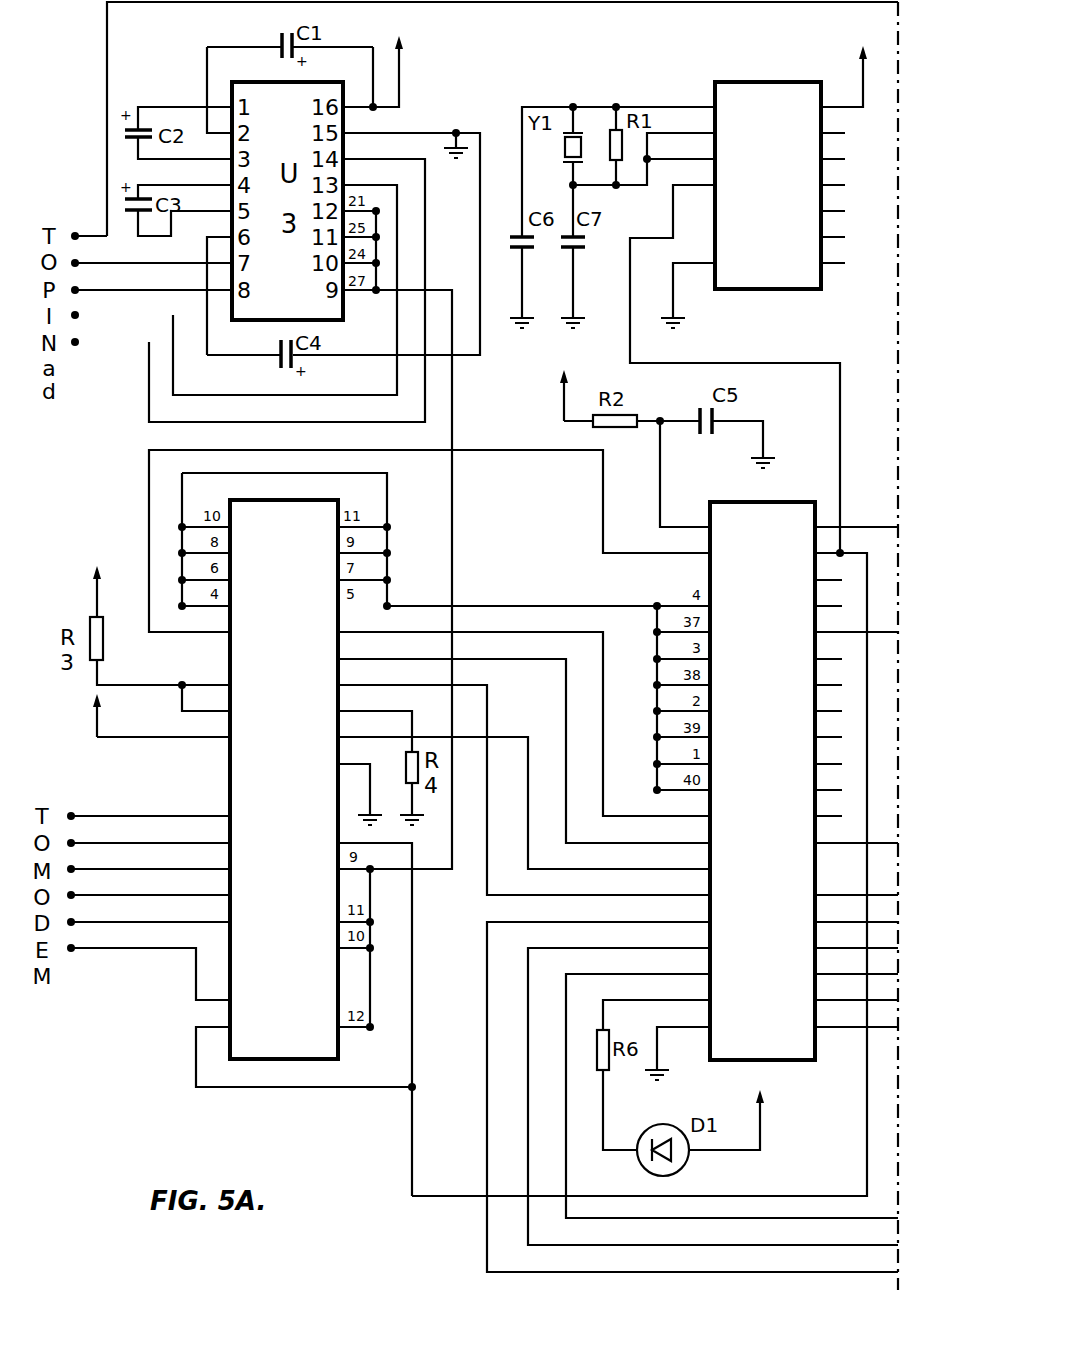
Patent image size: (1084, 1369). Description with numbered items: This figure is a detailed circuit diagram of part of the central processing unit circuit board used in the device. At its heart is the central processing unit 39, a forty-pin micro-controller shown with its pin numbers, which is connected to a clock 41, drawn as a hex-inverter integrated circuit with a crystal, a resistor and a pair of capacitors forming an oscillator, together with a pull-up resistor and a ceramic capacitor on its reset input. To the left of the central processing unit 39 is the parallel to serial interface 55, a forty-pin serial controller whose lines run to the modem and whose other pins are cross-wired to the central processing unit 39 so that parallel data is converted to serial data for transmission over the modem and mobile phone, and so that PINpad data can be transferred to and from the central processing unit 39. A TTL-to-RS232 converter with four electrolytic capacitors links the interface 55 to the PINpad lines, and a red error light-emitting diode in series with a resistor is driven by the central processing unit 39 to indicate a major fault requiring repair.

The clock 41 is at (725, 70).
The parallel to serial interface 55 is at (222, 776).
The central processing unit 39 is at (806, 1068).